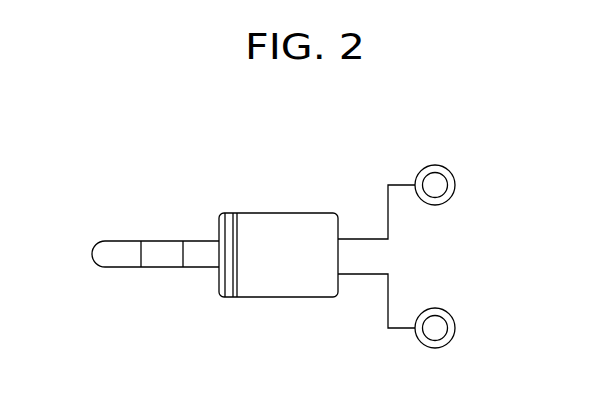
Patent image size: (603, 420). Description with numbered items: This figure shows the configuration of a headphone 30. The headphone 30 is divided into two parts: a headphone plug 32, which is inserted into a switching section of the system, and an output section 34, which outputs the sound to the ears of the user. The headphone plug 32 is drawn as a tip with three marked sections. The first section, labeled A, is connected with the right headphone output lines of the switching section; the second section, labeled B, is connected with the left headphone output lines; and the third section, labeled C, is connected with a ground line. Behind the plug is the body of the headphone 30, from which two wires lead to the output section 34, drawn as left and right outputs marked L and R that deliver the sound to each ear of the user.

The headphone 30 is at (278, 198).
The headphone plug 32 is at (158, 241).
The output section 34 is at (439, 308).